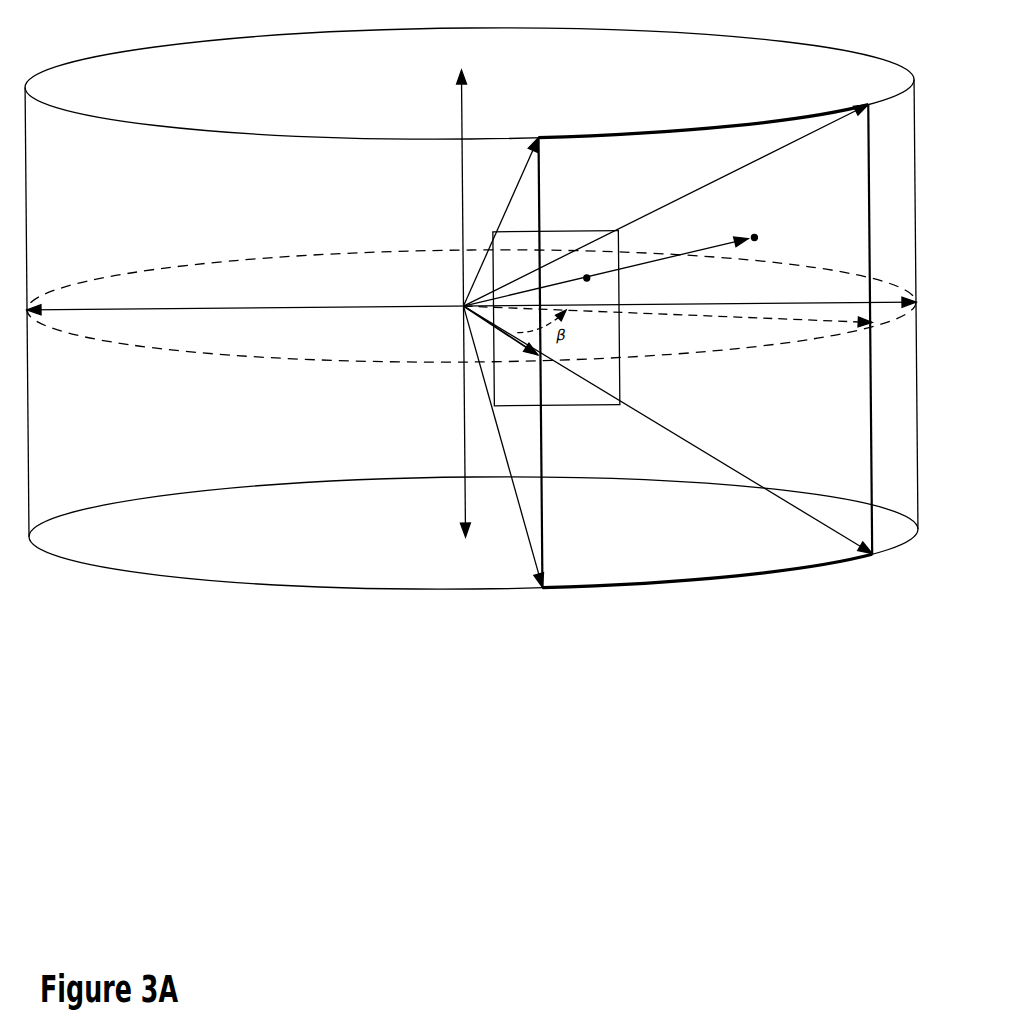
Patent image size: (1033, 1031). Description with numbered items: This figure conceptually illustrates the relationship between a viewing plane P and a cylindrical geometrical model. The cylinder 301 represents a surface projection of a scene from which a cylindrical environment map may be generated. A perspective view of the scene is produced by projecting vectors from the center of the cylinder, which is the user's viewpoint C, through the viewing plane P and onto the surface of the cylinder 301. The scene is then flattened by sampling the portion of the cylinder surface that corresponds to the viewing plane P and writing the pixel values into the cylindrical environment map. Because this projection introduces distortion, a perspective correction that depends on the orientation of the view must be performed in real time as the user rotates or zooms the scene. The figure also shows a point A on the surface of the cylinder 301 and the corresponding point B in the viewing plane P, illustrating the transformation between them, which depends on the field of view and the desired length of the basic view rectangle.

The cylinder 301 is at (644, 48).
The center of the cylinder C is at (471, 303).
The point on the surface of the cylinder A is at (616, 258).
The point in the viewing plane B is at (591, 267).
The viewing plane P is at (541, 318).